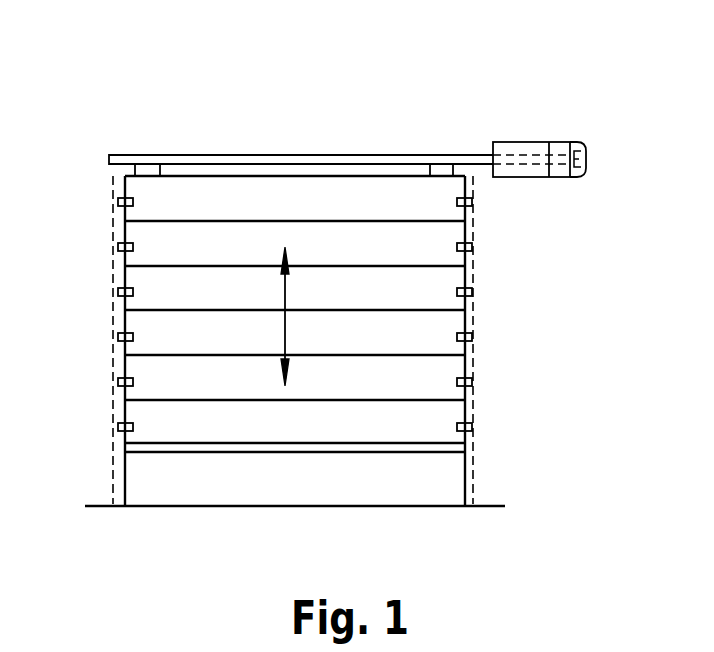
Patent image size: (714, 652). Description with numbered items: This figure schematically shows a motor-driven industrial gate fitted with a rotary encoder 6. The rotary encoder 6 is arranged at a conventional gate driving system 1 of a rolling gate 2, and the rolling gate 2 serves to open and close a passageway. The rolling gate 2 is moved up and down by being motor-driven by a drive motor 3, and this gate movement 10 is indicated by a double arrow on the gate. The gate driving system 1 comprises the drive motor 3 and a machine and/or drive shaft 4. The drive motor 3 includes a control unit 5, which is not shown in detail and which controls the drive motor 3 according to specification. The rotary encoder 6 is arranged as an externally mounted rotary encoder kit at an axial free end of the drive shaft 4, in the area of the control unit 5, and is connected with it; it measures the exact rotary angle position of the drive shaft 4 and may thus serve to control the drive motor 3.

The gate driving system 1 is at (548, 123).
The rolling gate 2 is at (395, 337).
The drive motor 3 is at (515, 143).
The drive shaft 4 is at (213, 156).
The control unit 5 is at (578, 178).
The rotary encoder 6 is at (586, 149).
The gate movement 10 is at (285, 324).